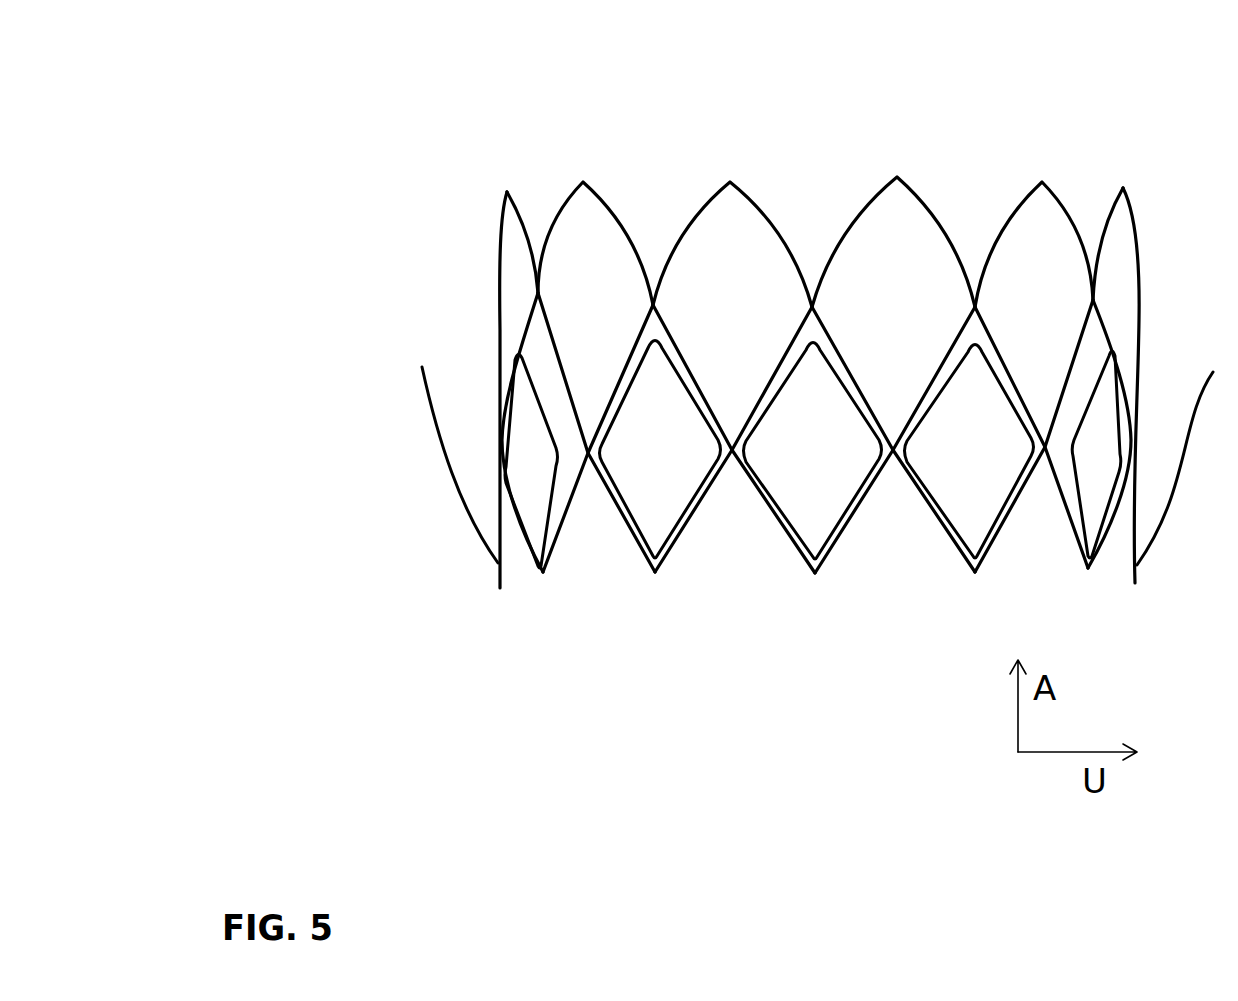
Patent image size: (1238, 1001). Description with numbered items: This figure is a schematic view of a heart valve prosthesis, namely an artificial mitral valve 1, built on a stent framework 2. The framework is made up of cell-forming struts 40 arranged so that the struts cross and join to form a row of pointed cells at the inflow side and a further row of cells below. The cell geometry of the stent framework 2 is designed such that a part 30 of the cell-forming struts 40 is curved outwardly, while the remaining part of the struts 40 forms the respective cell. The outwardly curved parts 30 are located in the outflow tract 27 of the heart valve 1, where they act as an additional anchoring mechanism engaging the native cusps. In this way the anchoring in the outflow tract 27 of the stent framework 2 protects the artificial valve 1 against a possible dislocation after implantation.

The artificial mitral valve 1 is at (678, 158).
The stent framework 2 is at (770, 223).
The outflow tract 27 is at (712, 563).
The part of the cell-forming struts 30 is at (462, 532).
The cell-forming struts 40 is at (768, 547).